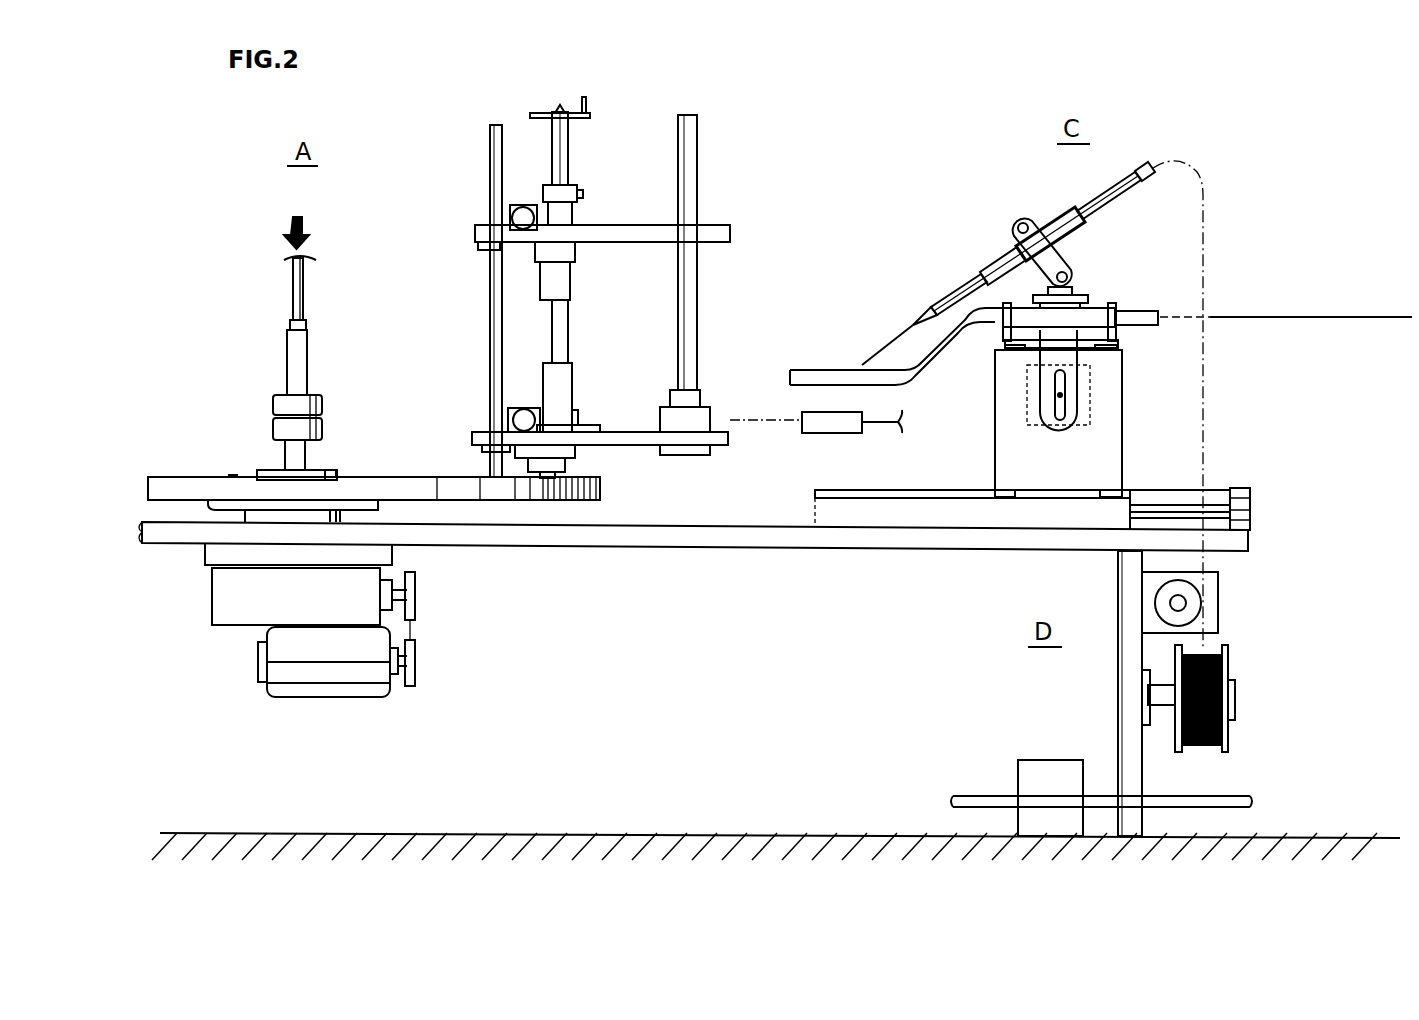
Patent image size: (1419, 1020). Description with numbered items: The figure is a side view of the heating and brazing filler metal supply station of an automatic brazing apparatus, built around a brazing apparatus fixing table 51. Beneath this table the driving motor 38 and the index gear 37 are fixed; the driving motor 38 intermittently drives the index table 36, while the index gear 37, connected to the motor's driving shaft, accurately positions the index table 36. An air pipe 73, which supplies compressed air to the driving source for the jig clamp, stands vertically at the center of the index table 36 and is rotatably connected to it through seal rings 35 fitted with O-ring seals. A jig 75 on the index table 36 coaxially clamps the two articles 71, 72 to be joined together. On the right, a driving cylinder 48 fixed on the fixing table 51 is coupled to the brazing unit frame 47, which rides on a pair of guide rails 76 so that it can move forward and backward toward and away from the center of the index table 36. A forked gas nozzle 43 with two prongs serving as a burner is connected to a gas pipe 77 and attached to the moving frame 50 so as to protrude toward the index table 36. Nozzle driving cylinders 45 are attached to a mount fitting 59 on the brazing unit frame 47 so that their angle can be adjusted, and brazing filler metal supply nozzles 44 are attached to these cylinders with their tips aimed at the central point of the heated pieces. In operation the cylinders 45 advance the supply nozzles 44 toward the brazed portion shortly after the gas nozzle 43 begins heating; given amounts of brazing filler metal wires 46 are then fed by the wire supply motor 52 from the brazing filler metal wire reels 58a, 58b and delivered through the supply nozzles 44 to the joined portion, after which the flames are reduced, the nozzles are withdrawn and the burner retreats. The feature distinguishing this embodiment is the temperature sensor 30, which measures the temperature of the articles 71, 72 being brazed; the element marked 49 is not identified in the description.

The temperature sensor 30 is at (825, 433).
The seal rings 35 is at (275, 402).
The index table 36 is at (413, 476).
The index gear 37 is at (232, 602).
The driving motor 38 is at (334, 690).
The gas nozzle 43 is at (826, 369).
The brazing filler metal supply nozzles 44 is at (925, 320).
The nozzle driving cylinders 45 is at (992, 268).
The brazing filler metal wires 46 is at (880, 330).
The brazing unit frame 47 is at (995, 462).
The driving cylinder 48 is at (1215, 490).
The drive box 49 is at (1046, 766).
The moving frame 50 is at (1112, 304).
The brazing apparatus fixing table 51 is at (665, 548).
The wire supply motor 52 is at (1190, 602).
The brazing filler metal wire reel 58a is at (1228, 662).
The brazing filler metal wire reel 58b is at (1228, 662).
The mount fitting 59 is at (1085, 290).
The article to be joined 71 is at (698, 162).
The article to be joined 72 is at (702, 410).
The air pipe 73 is at (306, 350).
The jig 75 is at (642, 145).
The guide rails 76 is at (815, 494).
The gas pipe 77 is at (1352, 316).